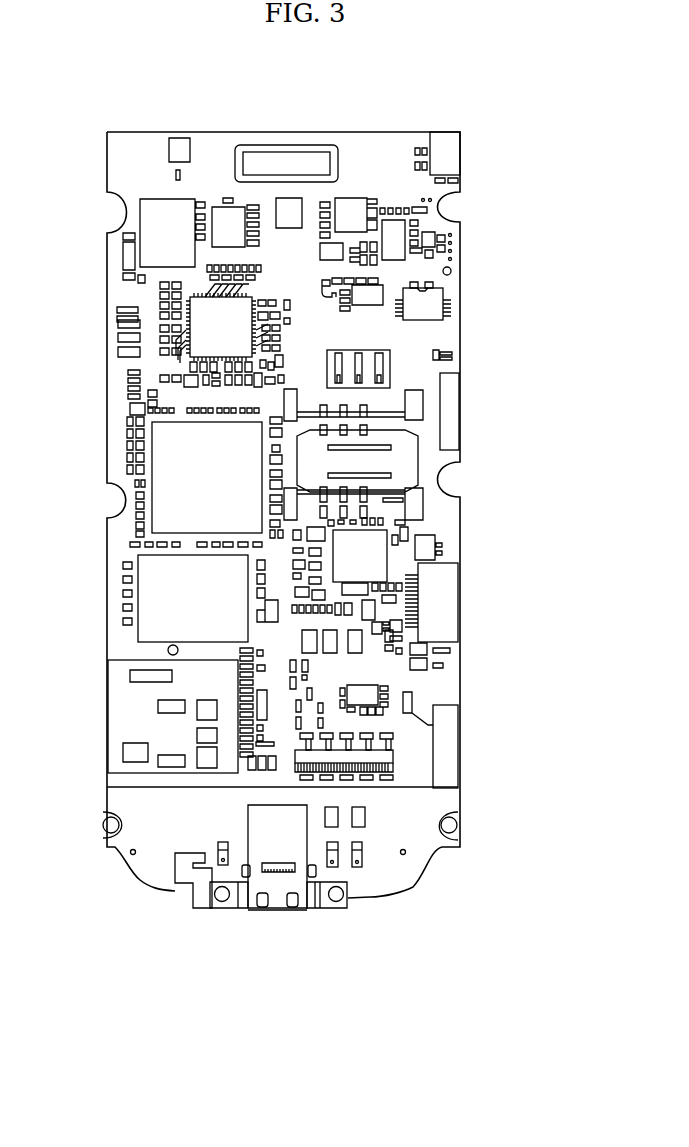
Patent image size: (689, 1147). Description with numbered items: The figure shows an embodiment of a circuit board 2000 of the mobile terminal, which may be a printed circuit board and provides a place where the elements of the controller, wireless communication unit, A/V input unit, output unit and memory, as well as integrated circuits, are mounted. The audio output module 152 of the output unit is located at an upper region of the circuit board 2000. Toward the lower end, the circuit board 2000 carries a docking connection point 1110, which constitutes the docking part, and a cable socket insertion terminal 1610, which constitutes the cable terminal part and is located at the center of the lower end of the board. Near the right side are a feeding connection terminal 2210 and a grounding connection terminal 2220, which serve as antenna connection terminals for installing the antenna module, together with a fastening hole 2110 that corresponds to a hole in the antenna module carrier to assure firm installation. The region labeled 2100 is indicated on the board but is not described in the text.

The circuit board 2000 is at (90, 90).
The audio output module 152 is at (285, 145).
The main board region 2100 is at (445, 688).
The grounding connection terminal 2220 is at (337, 808).
The feeding connection terminal 2210 is at (362, 808).
The fastening hole 2110 is at (458, 825).
The docking connection point 1110 is at (362, 853).
The cable socket insertion terminal 1610 is at (250, 913).